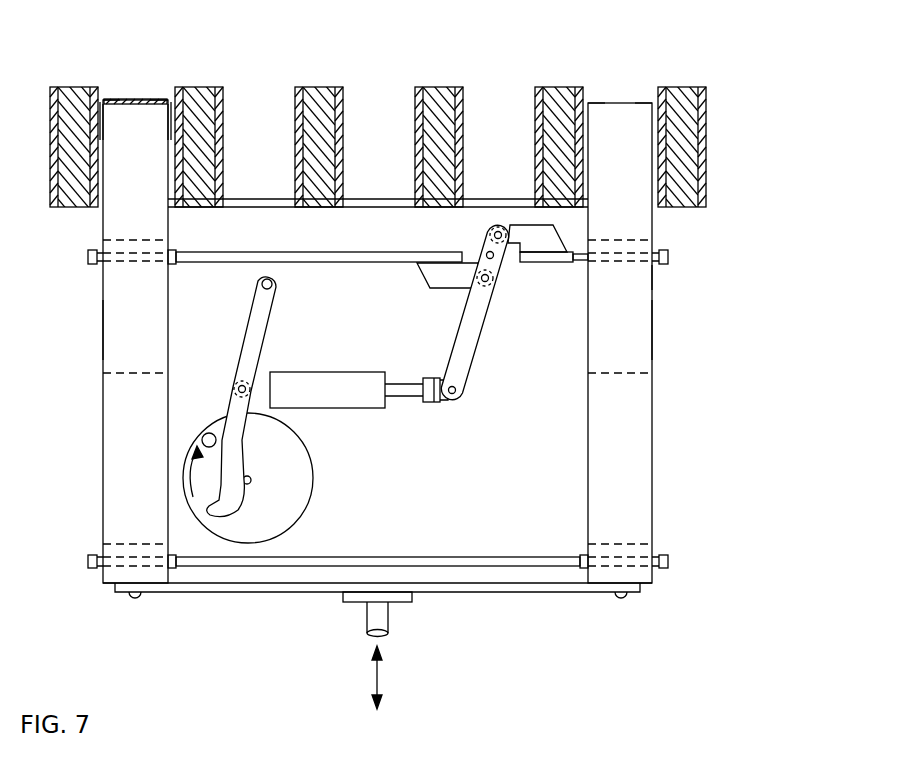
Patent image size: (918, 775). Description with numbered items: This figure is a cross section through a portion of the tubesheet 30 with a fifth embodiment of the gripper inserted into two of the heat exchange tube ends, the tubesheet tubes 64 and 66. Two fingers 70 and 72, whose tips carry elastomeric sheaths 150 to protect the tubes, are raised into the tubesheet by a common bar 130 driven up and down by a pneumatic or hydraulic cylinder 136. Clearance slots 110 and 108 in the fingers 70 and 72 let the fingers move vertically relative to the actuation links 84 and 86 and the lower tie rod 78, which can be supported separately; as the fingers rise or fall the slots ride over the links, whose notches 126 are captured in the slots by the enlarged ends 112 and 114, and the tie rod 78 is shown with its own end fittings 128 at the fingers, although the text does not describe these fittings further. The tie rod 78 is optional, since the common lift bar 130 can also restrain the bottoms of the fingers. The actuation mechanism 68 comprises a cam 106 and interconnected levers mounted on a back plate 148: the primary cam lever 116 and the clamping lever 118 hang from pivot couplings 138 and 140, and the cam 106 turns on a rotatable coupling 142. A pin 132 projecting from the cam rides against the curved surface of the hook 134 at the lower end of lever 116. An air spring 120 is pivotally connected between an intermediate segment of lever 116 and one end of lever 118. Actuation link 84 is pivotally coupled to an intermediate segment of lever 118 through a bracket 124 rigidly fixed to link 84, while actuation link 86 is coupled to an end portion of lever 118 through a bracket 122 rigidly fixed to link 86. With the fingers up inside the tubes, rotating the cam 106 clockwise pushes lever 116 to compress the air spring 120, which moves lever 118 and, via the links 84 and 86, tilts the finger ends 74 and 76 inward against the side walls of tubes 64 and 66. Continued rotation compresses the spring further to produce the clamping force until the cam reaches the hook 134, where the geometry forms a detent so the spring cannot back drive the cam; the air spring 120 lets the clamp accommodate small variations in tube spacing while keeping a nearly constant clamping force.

The tubesheet 30 is at (707, 115).
The tubesheet tube 64 is at (167, 99).
The tubesheet tube 66 is at (590, 103).
The actuation mechanism 68 is at (485, 383).
The finger 70 is at (103, 373).
The finger 72 is at (652, 373).
The finger end 74 is at (112, 100).
The finger end 76 is at (651, 103).
The tie rod 78 is at (435, 556).
The actuation link 84 is at (250, 252).
The actuation link 86 is at (560, 263).
The cam 106 is at (305, 500).
The clearance slot 108 is at (652, 330).
The clearance slot 110 is at (103, 330).
The enlarged end 112 is at (92, 257).
The enlarged end 114 is at (655, 275).
The primary cam lever 116 is at (242, 340).
The clamping lever 118 is at (478, 355).
The air spring 120 is at (335, 372).
The bracket 122 is at (535, 225).
The bracket 124 is at (438, 290).
The notch 126 is at (176, 252).
The lower fasteners 128 is at (667, 556).
The common bar 130 is at (540, 590).
The pin 132 is at (201, 440).
The hook 134 is at (188, 500).
The pneumatic or hydraulic cylinder 136 is at (390, 622).
The pivot coupling 138 is at (275, 284).
The pivot coupling 140 is at (483, 258).
The rotatable coupling 142 is at (255, 475).
The back plate 148 is at (440, 477).
The elastomeric sheath 150 is at (138, 97).